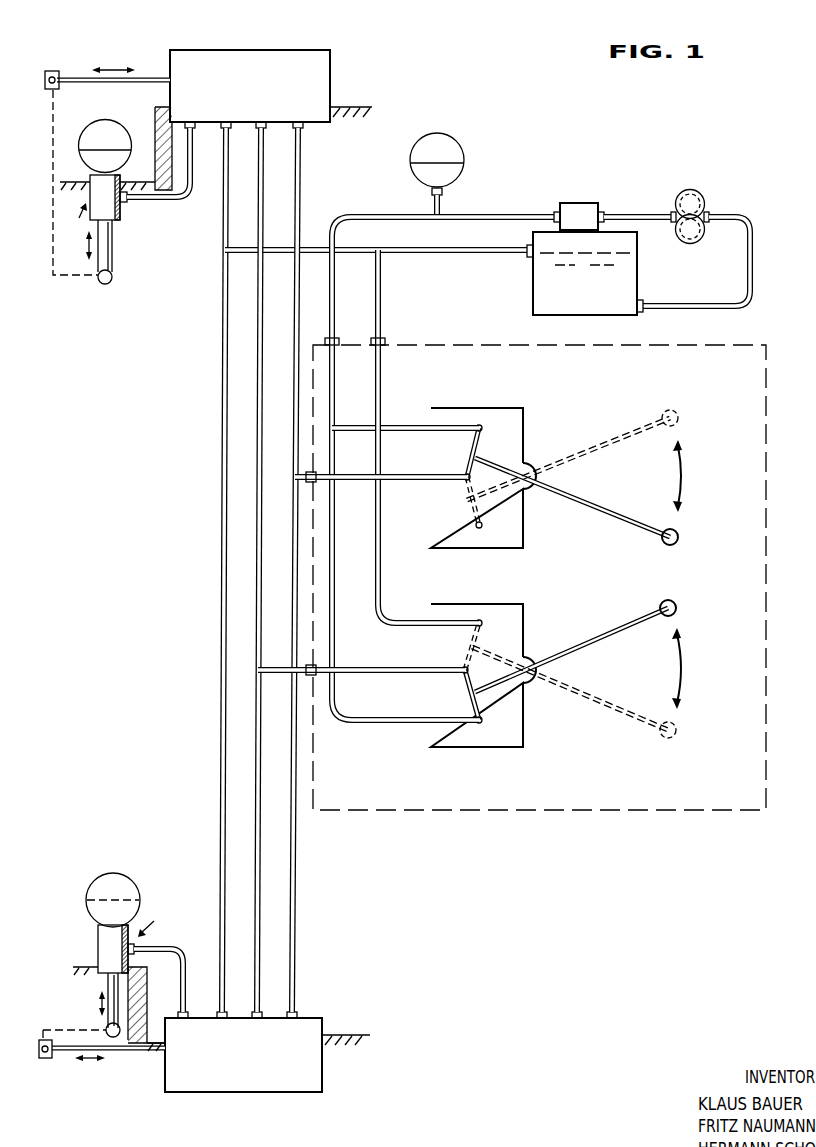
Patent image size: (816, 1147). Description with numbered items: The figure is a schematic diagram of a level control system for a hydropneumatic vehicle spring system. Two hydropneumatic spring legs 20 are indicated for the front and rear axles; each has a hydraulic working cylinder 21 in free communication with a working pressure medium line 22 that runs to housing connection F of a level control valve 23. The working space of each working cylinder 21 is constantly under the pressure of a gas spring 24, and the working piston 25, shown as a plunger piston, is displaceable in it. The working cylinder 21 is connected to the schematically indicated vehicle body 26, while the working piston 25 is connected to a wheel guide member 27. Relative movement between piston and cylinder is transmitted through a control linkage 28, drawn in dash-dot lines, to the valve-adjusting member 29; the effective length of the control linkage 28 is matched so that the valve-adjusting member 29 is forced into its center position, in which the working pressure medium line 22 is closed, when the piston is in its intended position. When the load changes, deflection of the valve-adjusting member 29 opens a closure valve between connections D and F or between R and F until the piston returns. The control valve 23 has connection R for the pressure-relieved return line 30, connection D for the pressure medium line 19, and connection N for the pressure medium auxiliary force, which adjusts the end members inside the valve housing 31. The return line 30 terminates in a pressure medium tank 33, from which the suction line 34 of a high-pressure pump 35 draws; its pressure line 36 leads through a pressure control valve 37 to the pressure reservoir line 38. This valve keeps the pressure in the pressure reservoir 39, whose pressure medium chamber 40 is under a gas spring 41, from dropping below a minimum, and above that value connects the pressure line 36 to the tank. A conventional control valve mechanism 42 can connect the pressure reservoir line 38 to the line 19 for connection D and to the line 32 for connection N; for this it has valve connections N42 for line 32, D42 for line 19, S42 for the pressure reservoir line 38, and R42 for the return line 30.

The pressure medium line 19 is at (292, 317).
The hydropneumatic spring leg 20 is at (118, 609).
The hydraulic working cylinder 21 is at (122, 212).
The working pressure medium line 22 is at (197, 172).
The level control valve 23 is at (235, 50).
The gas spring 24 is at (128, 134).
The working piston 25 is at (112, 248).
The vehicle body 26 is at (355, 107).
The wheel guide member 27 is at (110, 283).
The control linkage 28 is at (75, 280).
The valve-adjusting member 29 is at (158, 75).
The return line 30 is at (316, 247).
The valve housing 31 is at (326, 50).
The line for connection N 32 is at (257, 362).
The pressure medium tank 33 is at (640, 271).
The suction line 34 is at (752, 250).
The high-pressure pump 35 is at (705, 201).
The pressure line 36 is at (646, 212).
The pressure control valve 37 is at (587, 203).
The pressure reservoir line 38 is at (393, 213).
The pressure reservoir 39 is at (472, 168).
The pressure medium chamber 40 is at (461, 178).
The gas spring 41 is at (462, 140).
The control valve mechanism 42 is at (512, 550).
The valve connection for pressure reservoir line S42 is at (338, 340).
The valve connection for return line R42 is at (384, 340).
The valve connection for line 19 D42 is at (315, 484).
The valve connection for line 32 N42 is at (313, 682).